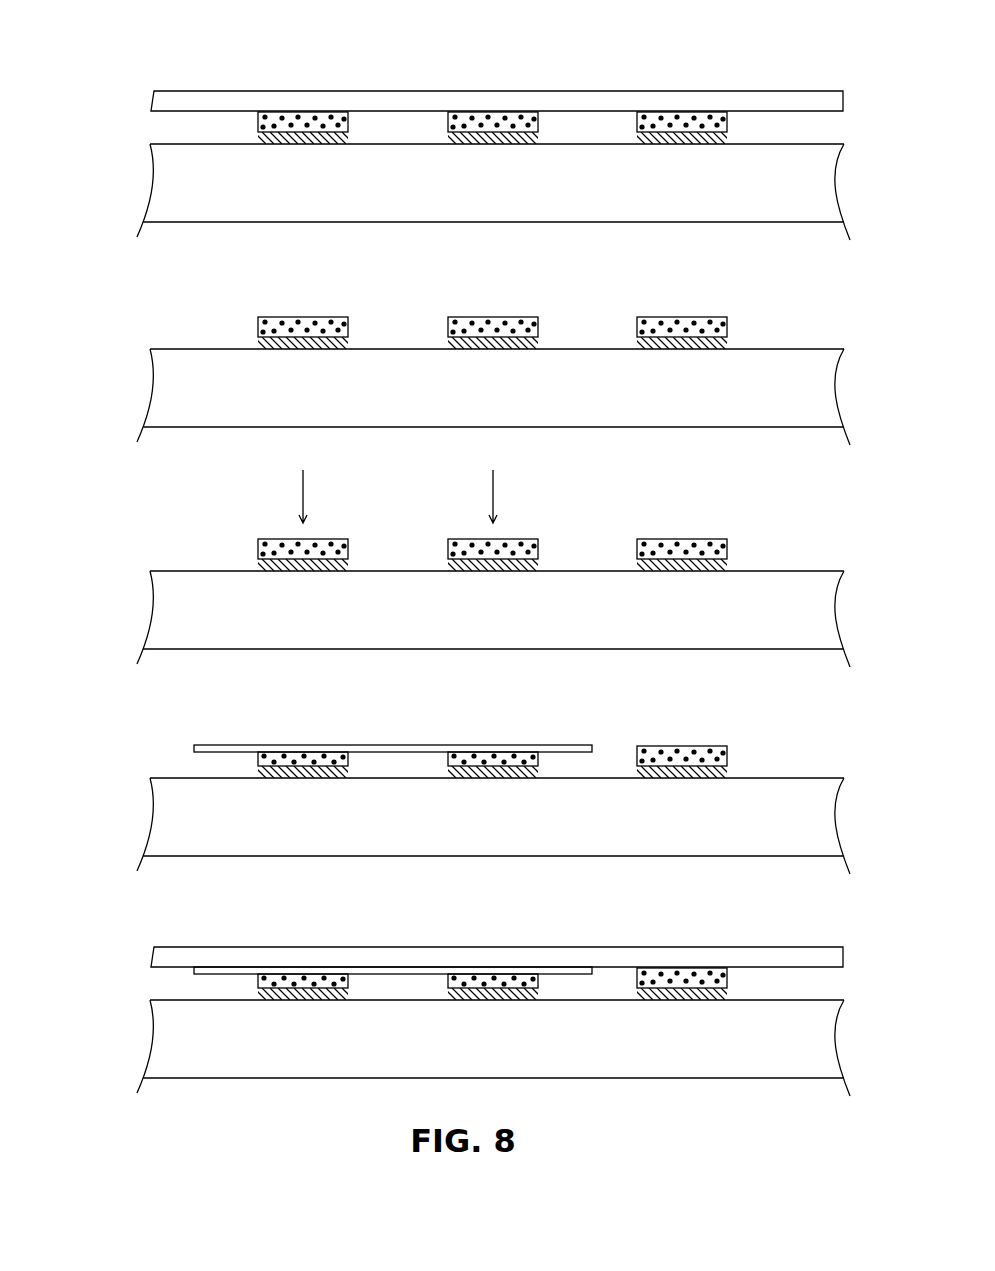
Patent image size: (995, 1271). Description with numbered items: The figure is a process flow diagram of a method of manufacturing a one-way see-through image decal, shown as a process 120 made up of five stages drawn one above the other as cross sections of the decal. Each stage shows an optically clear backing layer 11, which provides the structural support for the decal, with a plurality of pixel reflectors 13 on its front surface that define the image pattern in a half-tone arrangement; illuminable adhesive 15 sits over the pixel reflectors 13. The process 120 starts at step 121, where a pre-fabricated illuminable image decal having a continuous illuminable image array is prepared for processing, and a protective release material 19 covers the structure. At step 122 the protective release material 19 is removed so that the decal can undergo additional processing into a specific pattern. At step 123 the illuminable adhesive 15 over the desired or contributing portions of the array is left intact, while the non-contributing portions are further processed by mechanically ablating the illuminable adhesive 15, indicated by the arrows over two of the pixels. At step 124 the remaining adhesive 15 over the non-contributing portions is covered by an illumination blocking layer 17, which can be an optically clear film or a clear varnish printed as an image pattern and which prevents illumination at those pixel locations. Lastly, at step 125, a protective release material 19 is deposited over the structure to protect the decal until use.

The backing layer 11 is at (716, 192).
The pixel reflectors 13 is at (730, 138).
The illuminable adhesive 15 is at (715, 122).
The illumination blocking layer 17 is at (220, 750).
The protective release material 19 is at (800, 102).
The process 120 is at (66, 37).
The step 121 is at (134, 189).
The step 122 is at (134, 393).
The step 123 is at (134, 614).
The step 124 is at (134, 824).
The step 125 is at (134, 1044).